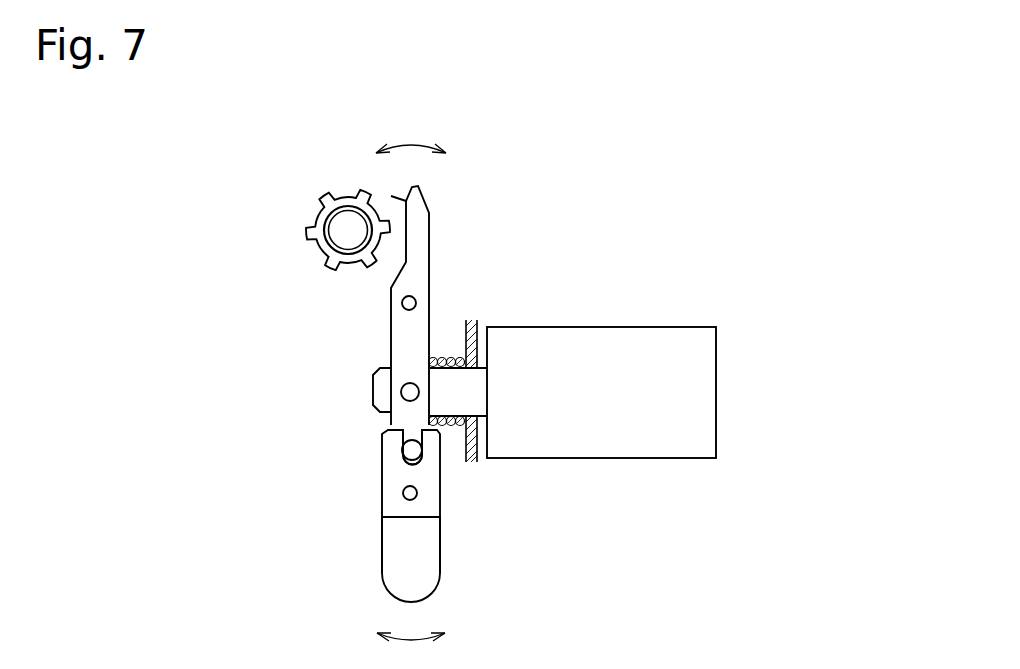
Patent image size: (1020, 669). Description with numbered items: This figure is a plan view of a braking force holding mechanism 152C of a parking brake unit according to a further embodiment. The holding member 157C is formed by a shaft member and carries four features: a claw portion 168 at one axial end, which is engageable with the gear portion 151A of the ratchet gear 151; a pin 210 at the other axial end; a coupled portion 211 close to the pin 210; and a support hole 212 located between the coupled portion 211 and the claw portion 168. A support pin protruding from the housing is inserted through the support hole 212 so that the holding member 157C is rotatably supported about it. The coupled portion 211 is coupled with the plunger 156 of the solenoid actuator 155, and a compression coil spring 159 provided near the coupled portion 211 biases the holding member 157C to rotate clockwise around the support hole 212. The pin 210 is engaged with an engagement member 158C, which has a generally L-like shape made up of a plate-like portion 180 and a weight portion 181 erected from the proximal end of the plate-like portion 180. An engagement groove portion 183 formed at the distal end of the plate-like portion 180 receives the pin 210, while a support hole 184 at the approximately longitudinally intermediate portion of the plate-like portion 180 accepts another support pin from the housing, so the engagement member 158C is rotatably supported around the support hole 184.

The ratchet gear 151 is at (339, 192).
The gear portion 151A is at (310, 233).
The braking force holding mechanism 152C is at (663, 203).
The solenoid actuator 155 is at (703, 392).
The plunger 156 is at (473, 392).
The holding member 157C is at (447, 242).
The engagement member 158C is at (458, 563).
The compression coil spring 159 is at (431, 360).
The claw portion 168 is at (391, 196).
The plate-like portion 180 is at (382, 468).
The weight portion 181 is at (382, 553).
The engagement groove portion 183 is at (421, 440).
The support hole 184 is at (403, 493).
The pin 210 is at (420, 452).
The coupled portion 211 is at (401, 392).
The support hole 212 is at (417, 303).